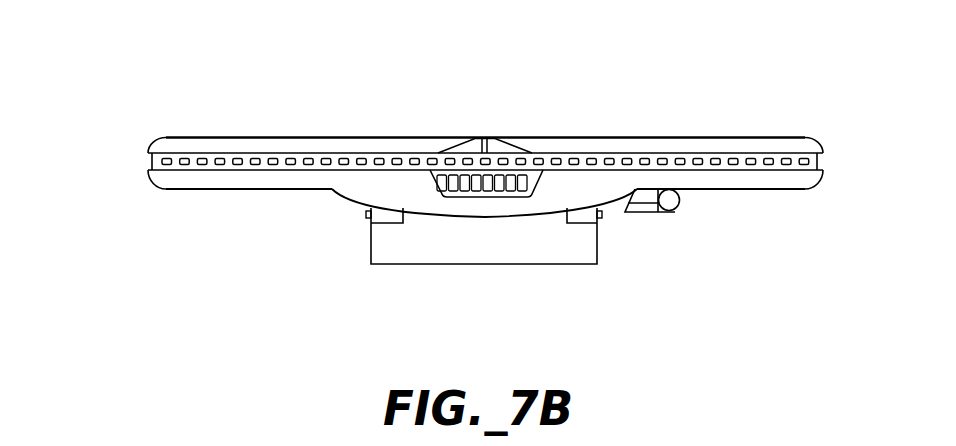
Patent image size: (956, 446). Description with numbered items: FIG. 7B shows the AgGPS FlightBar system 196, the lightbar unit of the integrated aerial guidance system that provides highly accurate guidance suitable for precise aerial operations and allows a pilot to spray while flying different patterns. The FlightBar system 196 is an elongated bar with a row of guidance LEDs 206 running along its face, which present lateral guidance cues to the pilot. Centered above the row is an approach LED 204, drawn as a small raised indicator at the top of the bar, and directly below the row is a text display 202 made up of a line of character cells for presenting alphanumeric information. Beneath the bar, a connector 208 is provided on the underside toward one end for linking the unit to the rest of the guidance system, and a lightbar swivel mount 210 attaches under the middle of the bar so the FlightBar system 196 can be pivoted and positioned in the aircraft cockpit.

The AgGPS 132 FlightBar system 196 is at (150, 244).
The text display 202 is at (433, 180).
The approach LED 204 is at (485, 137).
The guidance LEDs 206 is at (527, 158).
The connector 208 is at (708, 269).
The lightbar swivel mount 210 is at (371, 237).